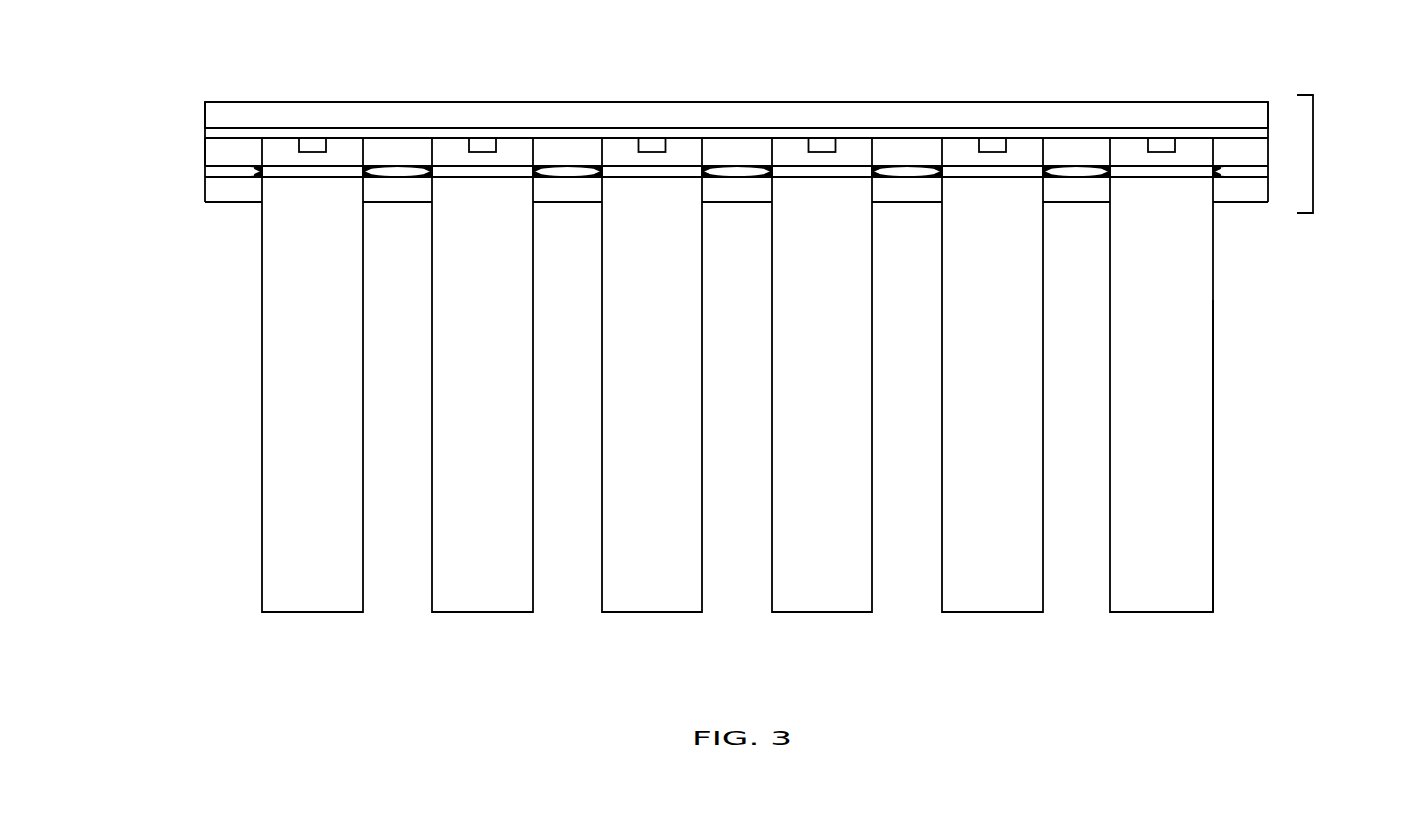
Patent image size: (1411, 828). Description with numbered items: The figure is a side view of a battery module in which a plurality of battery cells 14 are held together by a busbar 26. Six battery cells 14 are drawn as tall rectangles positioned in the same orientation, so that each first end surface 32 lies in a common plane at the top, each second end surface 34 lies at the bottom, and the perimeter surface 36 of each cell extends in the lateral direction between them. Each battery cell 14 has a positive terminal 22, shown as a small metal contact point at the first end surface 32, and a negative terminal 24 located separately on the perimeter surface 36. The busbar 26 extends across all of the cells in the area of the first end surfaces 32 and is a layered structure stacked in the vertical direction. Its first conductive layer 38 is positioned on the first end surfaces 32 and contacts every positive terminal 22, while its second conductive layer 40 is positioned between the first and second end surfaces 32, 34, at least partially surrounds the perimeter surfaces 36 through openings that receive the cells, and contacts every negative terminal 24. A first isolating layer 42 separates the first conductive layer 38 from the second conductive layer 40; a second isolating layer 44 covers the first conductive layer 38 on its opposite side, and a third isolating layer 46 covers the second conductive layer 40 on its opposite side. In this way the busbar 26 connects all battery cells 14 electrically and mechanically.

The battery cell 14 is at (732, 361).
The positive terminal 22 is at (314, 147).
The negative terminal 24 is at (333, 172).
The busbar 26 is at (1313, 172).
The first end surface 32 is at (1177, 138).
The second end surface 34 is at (1188, 612).
The perimeter surface 36 is at (1178, 382).
The first conductive layer 38 is at (212, 132).
The second conductive layer 40 is at (217, 170).
The first isolating layer 42 is at (217, 151).
The second isolating layer 44 is at (212, 121).
The third isolating layer 46 is at (218, 185).